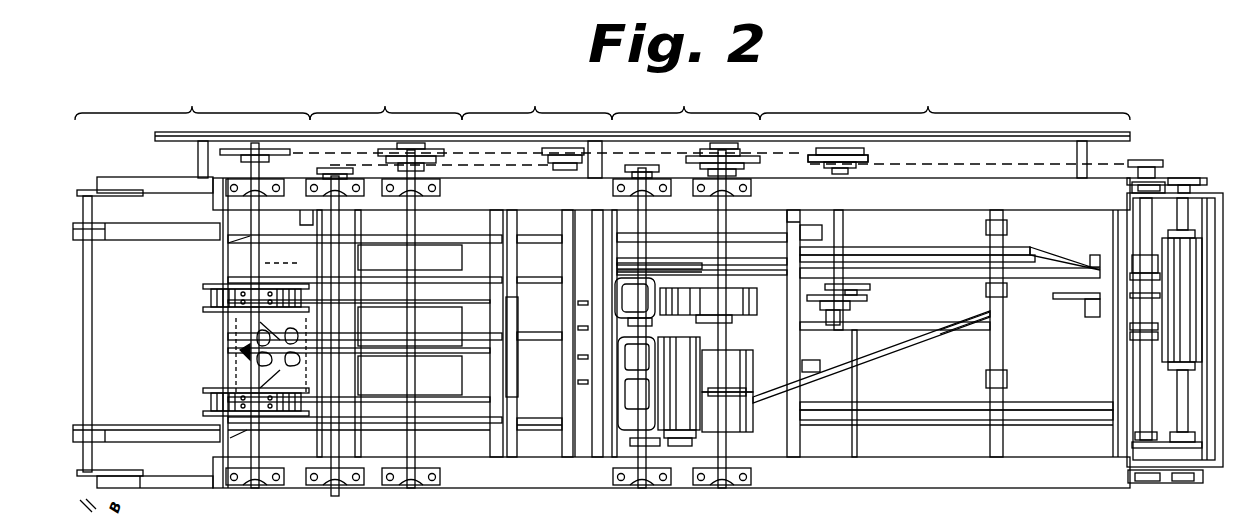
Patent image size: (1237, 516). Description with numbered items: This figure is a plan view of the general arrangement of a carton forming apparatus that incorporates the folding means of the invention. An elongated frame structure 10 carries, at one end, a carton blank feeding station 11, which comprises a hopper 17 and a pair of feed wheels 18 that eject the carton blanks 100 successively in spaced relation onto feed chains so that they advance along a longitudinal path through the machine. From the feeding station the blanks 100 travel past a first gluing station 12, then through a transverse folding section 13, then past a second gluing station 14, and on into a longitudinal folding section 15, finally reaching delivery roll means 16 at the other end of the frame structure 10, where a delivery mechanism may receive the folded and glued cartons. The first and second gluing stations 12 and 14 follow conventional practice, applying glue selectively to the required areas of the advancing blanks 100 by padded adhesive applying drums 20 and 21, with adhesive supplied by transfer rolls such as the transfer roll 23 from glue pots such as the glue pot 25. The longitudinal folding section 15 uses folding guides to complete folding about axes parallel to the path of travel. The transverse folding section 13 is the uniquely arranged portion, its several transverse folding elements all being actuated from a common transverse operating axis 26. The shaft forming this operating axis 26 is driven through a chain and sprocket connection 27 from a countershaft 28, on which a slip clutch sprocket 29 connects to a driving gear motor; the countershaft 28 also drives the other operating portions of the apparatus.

The frame structure 10 is at (940, 487).
The carton blank feeding station 11 is at (192, 101).
The first gluing station 12 is at (386, 99).
The transverse folding section 13 is at (537, 101).
The second gluing station 14 is at (686, 100).
The longitudinal folding section 15 is at (945, 100).
The delivery roll means 16 is at (1186, 178).
The hopper 17 is at (138, 244).
The feed wheels 18 is at (205, 297).
The padded adhesive applying drum 20 is at (440, 385).
The padded adhesive applying drum 21 is at (756, 392).
The transfer roll 23 is at (686, 420).
The glue pot 25 is at (622, 432).
The common transverse operating axis 26 is at (556, 447).
The chain and sprocket connection 27 is at (804, 157).
The countershaft 28 is at (845, 232).
The slip clutch sprocket 29 is at (868, 297).
The carton blanks 100 is at (222, 343).